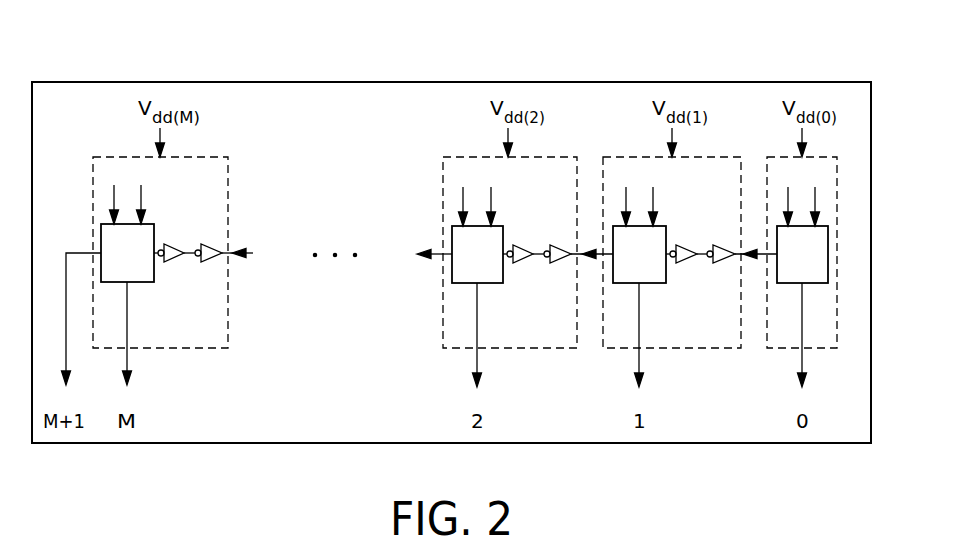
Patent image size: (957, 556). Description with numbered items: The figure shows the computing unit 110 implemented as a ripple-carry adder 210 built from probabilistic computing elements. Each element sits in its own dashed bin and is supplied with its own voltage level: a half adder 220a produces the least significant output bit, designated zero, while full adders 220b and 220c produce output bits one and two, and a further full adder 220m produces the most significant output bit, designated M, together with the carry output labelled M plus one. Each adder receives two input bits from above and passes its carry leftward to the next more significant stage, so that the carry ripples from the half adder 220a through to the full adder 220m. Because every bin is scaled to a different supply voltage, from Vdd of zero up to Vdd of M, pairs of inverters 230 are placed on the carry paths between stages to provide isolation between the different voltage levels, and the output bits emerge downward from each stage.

The computing unit 110 is at (737, 54).
The ripple-carry adder 210 is at (367, 169).
The full adder 220m is at (178, 271).
The full adder 220c is at (485, 283).
The full adder 220b is at (647, 283).
The half adder 220a is at (789, 283).
The inverters 230 is at (212, 225).